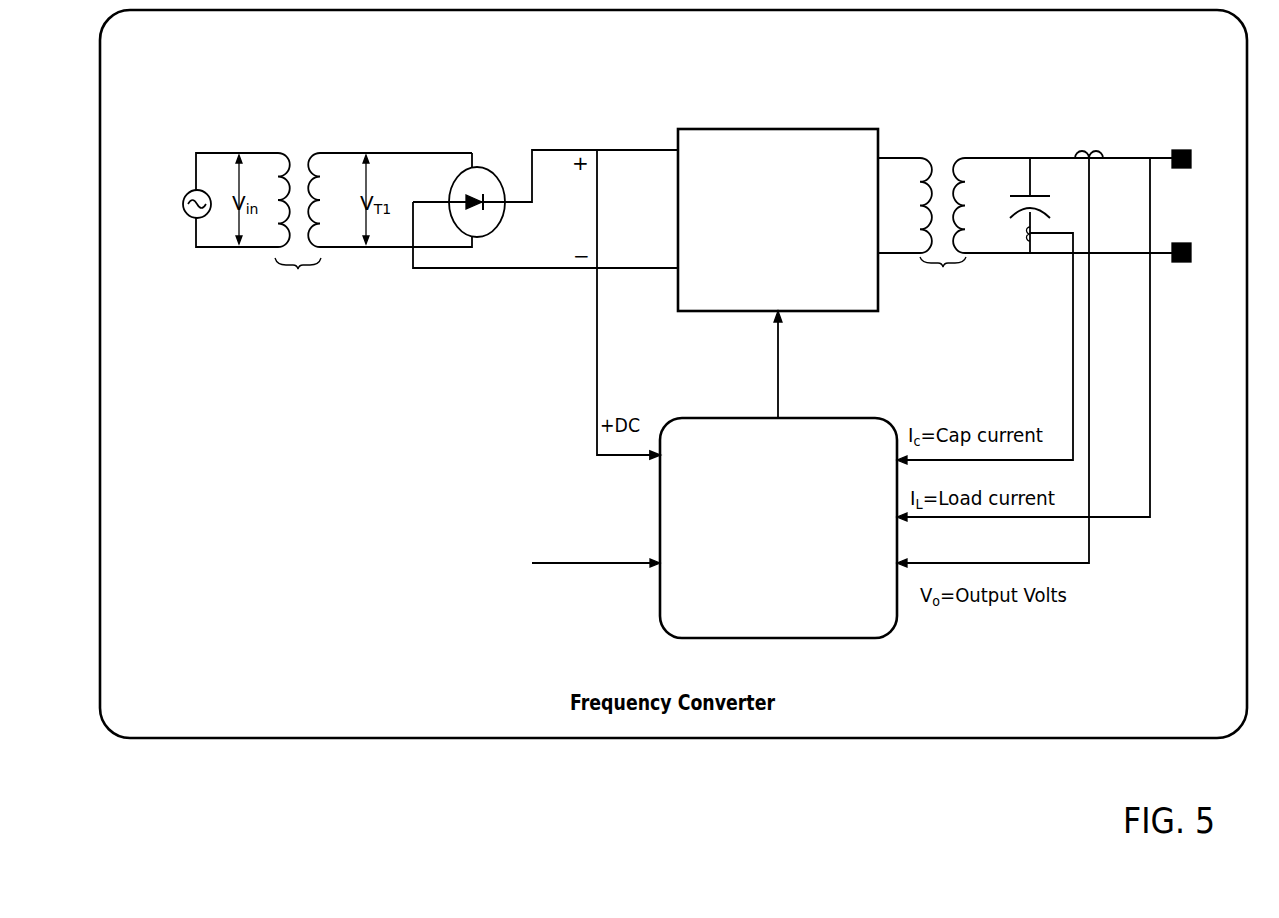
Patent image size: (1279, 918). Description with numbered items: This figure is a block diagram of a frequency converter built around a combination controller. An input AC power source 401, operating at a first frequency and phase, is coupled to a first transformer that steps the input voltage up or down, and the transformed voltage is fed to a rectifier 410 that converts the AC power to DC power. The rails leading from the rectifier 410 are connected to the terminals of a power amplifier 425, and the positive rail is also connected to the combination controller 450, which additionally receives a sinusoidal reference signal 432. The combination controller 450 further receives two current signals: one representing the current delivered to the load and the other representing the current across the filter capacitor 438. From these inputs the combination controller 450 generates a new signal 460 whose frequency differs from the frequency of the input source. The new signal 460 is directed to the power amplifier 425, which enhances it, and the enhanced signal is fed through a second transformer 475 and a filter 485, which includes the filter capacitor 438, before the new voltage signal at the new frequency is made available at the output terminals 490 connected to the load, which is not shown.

The input AC power source 401 is at (184, 201).
The rectifier 410 is at (486, 170).
The power amplifier 425 is at (868, 292).
The sinusoidal reference signal 432 is at (468, 572).
The filter capacitor 438 is at (1040, 190).
The combination controller 450 is at (868, 622).
The new signal 460 is at (779, 368).
The second transformer 475 is at (1025, 226).
The filter 485 is at (1052, 125).
The output terminals 490 is at (1192, 252).